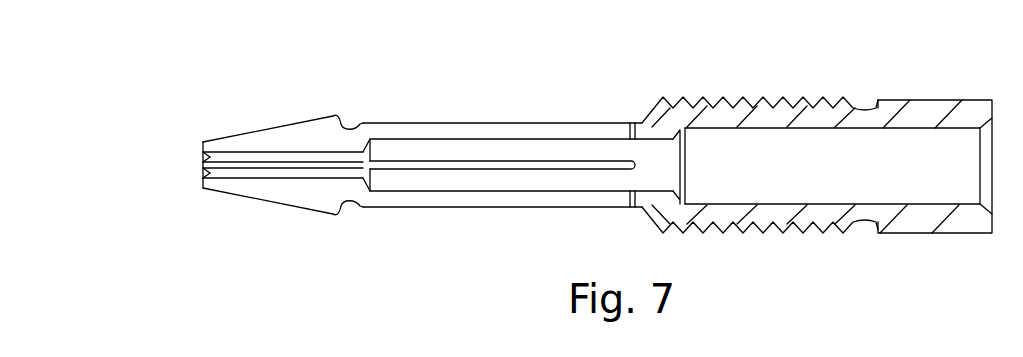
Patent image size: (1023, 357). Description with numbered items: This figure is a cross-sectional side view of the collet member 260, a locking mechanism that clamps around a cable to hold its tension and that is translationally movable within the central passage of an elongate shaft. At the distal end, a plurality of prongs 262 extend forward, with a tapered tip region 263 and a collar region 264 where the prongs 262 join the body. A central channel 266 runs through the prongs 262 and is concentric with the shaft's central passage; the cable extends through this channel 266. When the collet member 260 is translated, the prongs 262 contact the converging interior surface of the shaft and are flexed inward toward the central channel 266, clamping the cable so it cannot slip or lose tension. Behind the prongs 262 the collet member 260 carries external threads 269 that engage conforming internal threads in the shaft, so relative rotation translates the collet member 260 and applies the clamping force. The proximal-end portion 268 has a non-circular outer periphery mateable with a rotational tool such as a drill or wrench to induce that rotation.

The collet member 260 is at (106, 68).
The plurality of prongs 262 is at (415, 220).
The jaw tip 263 is at (248, 108).
The collet sleeve 264 is at (308, 221).
The central channel 266 is at (810, 152).
The proximal-end portion 268 is at (922, 118).
The external threads 269 is at (775, 98).